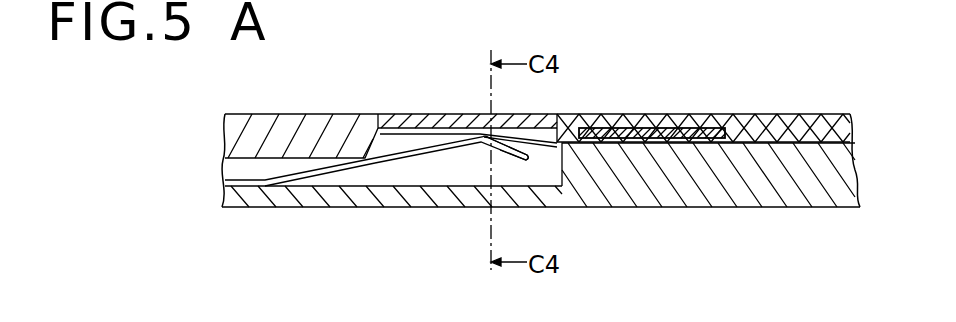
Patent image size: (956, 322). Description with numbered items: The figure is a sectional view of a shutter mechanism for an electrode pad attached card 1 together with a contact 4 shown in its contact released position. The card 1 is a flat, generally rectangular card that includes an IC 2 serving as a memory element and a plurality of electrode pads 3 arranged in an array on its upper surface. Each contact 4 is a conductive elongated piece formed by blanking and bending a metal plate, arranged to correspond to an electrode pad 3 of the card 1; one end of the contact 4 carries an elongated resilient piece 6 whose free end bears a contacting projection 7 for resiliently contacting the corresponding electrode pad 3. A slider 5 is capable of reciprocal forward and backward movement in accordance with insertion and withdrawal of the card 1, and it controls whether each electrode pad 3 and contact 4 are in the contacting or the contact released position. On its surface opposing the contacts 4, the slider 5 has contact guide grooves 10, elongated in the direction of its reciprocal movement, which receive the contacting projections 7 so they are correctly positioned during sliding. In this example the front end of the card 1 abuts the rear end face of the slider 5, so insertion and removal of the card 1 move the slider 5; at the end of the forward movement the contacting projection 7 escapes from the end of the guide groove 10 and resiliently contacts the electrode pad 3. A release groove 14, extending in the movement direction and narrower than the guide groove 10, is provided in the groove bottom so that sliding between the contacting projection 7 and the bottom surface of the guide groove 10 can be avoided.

The card 1 is at (772, 118).
The IC 2 is at (683, 127).
The electrode pads 3 is at (624, 126).
The contacts 4 is at (311, 174).
The slider 5 is at (293, 116).
The elongated resilient piece 6 is at (381, 163).
The contacting projection 7 is at (484, 133).
The contact guide grooves 10 is at (465, 154).
The release groove 14 is at (400, 116).